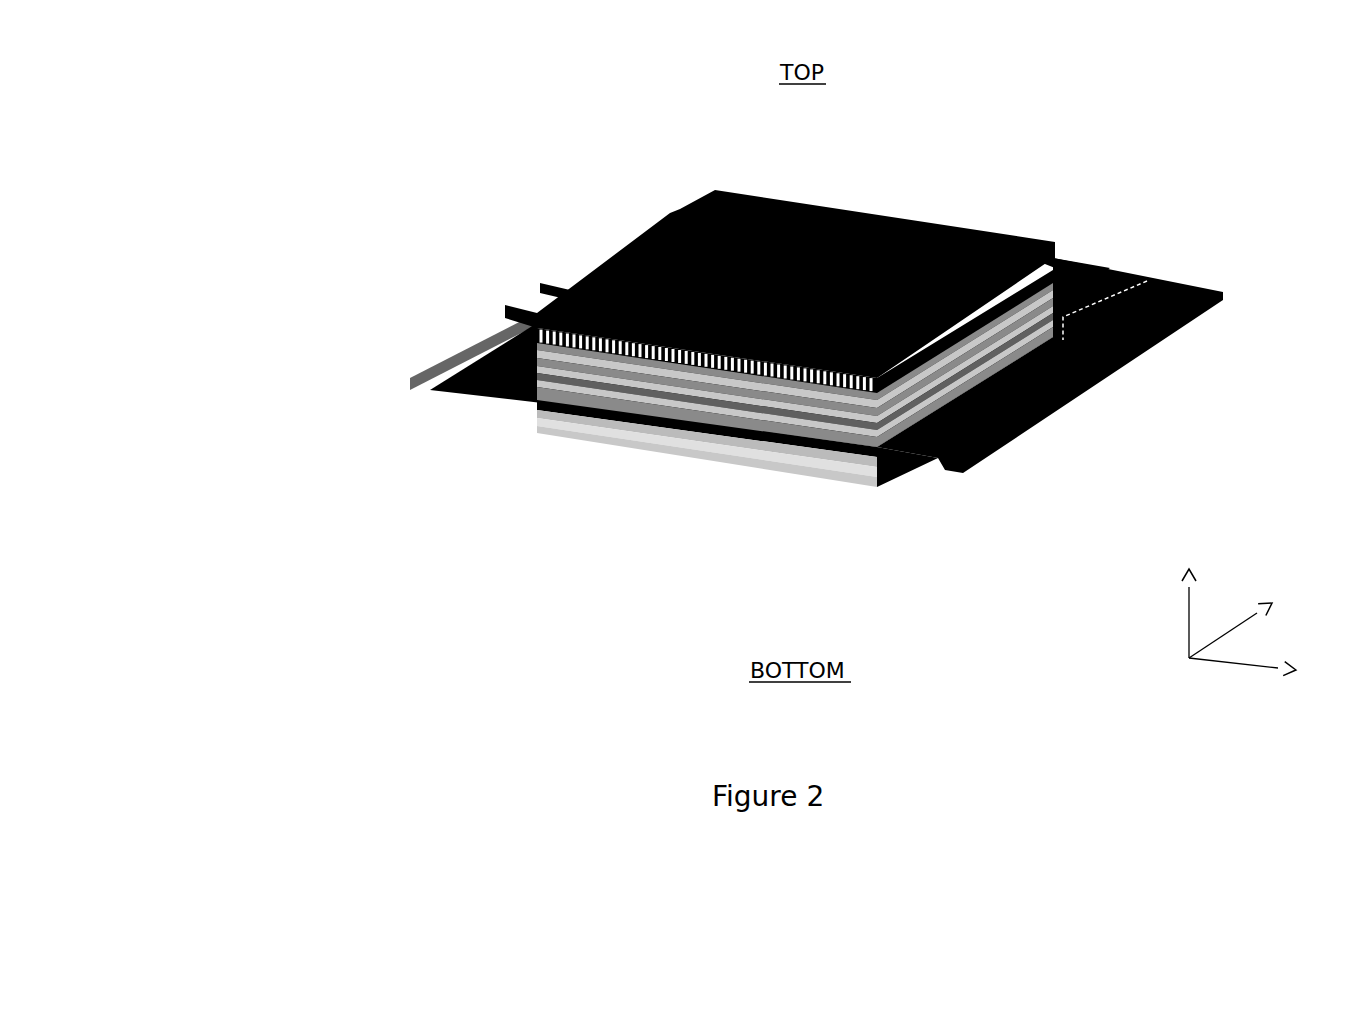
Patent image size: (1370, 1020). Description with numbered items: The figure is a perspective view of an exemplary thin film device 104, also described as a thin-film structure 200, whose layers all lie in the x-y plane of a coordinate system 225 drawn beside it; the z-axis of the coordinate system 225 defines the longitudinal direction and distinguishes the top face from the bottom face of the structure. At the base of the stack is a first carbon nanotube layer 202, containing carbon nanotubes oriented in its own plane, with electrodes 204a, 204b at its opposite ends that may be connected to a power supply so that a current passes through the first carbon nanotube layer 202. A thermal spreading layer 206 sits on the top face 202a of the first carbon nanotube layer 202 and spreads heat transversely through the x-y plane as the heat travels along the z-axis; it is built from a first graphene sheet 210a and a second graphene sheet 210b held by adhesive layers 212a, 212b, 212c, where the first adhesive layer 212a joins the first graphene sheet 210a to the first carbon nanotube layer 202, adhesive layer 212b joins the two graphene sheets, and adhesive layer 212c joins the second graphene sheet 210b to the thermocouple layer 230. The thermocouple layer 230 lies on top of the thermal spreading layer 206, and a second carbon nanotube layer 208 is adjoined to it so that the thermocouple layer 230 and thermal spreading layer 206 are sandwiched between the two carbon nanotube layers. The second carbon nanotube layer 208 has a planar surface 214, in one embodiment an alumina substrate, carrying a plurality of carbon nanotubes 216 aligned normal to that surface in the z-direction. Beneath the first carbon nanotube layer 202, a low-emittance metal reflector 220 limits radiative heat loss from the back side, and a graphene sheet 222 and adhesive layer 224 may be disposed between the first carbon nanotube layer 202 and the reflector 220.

The thin film device 104 is at (1083, 170).
The thin-film structure 200 is at (889, 195).
The first carbon nanotube layer 202 is at (570, 410).
The top face of the first carbon nanotube layer 202a is at (1090, 270).
The electrode 204a is at (1088, 395).
The electrode 204b is at (610, 250).
The thermal spreading layer 206 is at (1147, 282).
The second carbon nanotube layer 208 is at (1063, 257).
The first graphene sheet 210a is at (533, 383).
The second graphene sheet 210b is at (533, 363).
The first adhesive layer 212a is at (533, 371).
The adhesive layer 212b is at (537, 400).
The adhesive layer 212c is at (533, 355).
The planar surface 214 is at (523, 303).
The carbon nanotubes 216 is at (553, 283).
The reflector 220 is at (677, 462).
The graphene sheet 222 is at (620, 447).
The adhesive layer 224 is at (605, 427).
The coordinate system 225 is at (1299, 555).
The thermocouple layer 230 is at (908, 465).